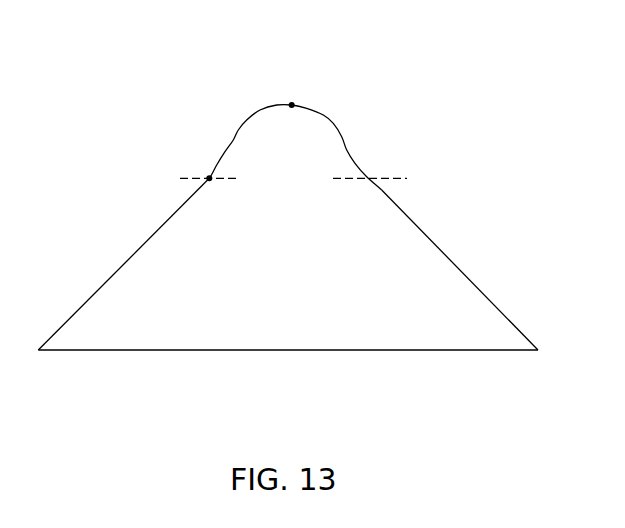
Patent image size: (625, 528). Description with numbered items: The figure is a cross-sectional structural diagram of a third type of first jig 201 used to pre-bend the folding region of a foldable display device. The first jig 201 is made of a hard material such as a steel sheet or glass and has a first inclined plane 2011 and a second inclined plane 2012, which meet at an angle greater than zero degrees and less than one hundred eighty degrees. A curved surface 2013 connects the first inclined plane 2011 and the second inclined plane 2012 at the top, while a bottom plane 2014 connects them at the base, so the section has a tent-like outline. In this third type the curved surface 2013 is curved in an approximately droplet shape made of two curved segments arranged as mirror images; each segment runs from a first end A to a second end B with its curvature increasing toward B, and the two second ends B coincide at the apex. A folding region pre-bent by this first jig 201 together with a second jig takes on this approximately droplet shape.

The first jig 201 is at (102, 65).
The first inclined plane 2011 is at (450, 259).
The second inclined plane 2012 is at (148, 240).
The curved surface 2013 is at (308, 107).
The bottom plane 2014 is at (292, 352).